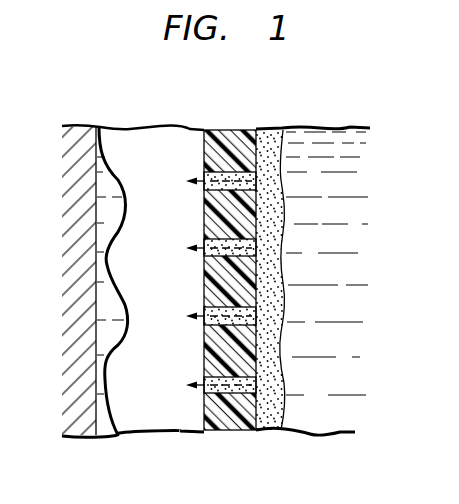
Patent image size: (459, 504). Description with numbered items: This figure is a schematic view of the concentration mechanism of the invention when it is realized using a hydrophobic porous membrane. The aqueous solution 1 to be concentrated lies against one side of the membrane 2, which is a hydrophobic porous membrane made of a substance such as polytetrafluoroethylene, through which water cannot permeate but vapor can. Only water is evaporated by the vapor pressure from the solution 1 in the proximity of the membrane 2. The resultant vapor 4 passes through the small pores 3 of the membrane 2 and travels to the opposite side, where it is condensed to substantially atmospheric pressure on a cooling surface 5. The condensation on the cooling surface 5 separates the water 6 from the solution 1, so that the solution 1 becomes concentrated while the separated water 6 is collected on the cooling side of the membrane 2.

The solution 1 is at (336, 415).
The membrane 2 is at (230, 143).
The pores 3 is at (205, 172).
The vapor 4 is at (204, 306).
The cooling surface 5 is at (70, 127).
The water 6 is at (118, 335).